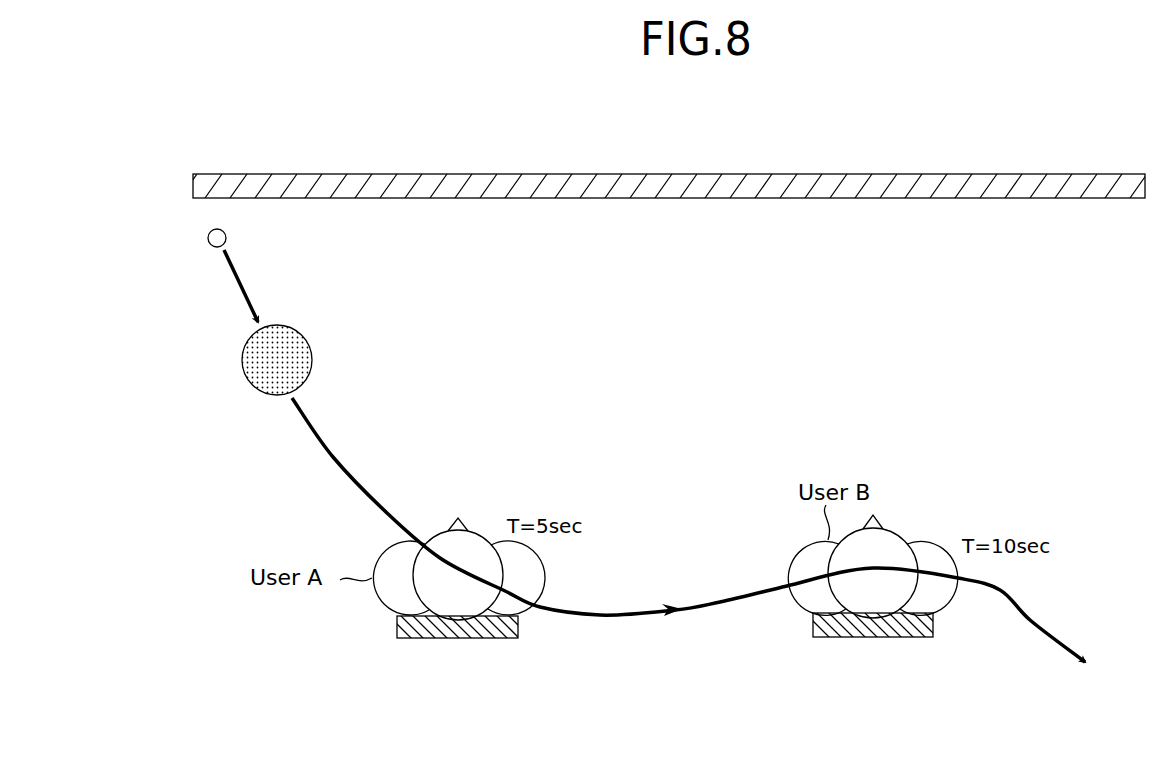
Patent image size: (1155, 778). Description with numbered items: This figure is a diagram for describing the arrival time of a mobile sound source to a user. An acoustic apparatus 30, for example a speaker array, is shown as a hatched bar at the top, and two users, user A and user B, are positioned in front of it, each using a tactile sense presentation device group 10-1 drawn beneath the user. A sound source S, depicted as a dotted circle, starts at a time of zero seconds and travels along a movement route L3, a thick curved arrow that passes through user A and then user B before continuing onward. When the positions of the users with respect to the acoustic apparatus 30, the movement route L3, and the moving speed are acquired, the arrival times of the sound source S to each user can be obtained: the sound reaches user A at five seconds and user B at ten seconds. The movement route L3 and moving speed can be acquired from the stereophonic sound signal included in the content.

The acoustic apparatus 30 is at (912, 174).
The tactile sense presentation device group 10-1 is at (432, 638).
The sound source S is at (244, 363).
The movement route L3 is at (302, 465).